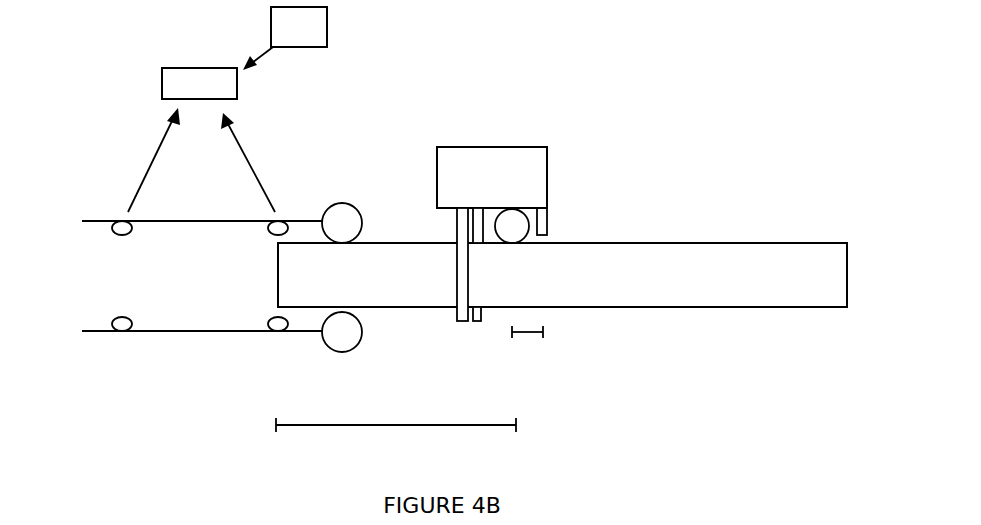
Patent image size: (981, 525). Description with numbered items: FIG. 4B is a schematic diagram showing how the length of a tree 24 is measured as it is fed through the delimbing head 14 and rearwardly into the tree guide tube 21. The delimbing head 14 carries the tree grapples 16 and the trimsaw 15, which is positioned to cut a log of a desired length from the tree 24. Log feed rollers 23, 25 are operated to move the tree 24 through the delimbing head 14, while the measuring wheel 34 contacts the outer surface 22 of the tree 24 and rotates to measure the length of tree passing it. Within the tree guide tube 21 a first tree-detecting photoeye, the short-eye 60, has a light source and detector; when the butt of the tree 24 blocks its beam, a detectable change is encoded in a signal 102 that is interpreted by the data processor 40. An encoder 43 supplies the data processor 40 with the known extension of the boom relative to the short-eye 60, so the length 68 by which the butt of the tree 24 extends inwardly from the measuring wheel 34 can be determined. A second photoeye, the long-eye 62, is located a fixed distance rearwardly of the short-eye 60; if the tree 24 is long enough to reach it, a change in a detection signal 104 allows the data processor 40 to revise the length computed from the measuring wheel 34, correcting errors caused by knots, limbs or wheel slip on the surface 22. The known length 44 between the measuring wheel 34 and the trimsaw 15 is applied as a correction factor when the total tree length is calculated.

The delimbing head 14 is at (492, 191).
The trimsaw 15 is at (548, 223).
The tree grapples 16 is at (457, 232).
The tree guide tube 21 is at (202, 276).
The outer surface 22 is at (378, 243).
The log feed roller 23 is at (342, 223).
The tree 24 is at (562, 275).
The log feed roller 25 is at (342, 332).
The measuring wheel 34 is at (512, 226).
The data processor 40 is at (199, 83).
The encoder 43 is at (285, 38).
The length 44 is at (523, 333).
The short-eye 60 is at (280, 220).
The long-eye 62 is at (118, 220).
The length 68 is at (396, 434).
The signal 102 is at (253, 162).
The detection signal 104 is at (147, 160).